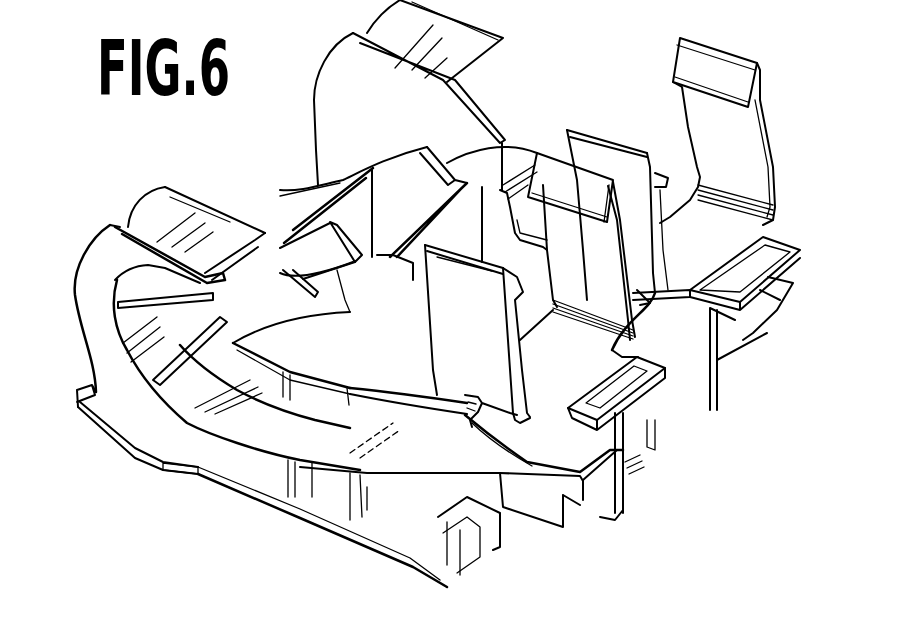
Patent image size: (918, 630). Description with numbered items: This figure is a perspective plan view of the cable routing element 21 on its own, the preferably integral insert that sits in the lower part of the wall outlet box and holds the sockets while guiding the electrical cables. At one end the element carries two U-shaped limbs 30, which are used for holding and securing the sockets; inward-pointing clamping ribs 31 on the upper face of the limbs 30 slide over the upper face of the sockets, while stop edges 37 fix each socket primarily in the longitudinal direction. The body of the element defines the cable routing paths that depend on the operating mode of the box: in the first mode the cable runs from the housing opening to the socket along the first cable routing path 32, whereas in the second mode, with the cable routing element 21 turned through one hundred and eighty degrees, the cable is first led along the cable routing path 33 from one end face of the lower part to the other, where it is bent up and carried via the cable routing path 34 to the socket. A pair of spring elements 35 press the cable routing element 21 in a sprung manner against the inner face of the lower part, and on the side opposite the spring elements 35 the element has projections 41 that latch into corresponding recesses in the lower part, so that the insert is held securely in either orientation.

The cable routing element 21 is at (562, 71).
The U-shaped limbs 30 is at (745, 157).
The clamping ribs 31 is at (738, 85).
The first cable routing path 32 is at (510, 163).
The cable routing path 33 is at (730, 340).
The cable routing path 34 is at (463, 47).
The spring elements 35 is at (780, 310).
The stop edges 37 is at (775, 248).
The projections 41 is at (78, 392).